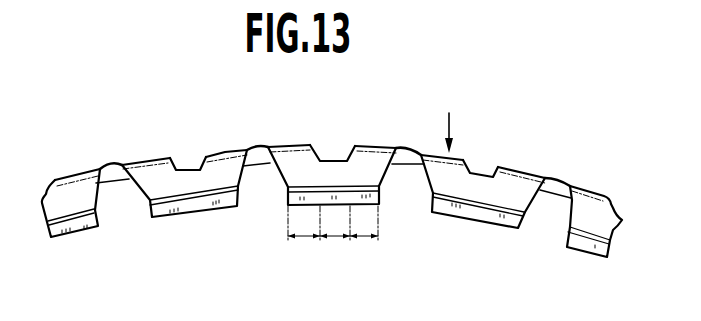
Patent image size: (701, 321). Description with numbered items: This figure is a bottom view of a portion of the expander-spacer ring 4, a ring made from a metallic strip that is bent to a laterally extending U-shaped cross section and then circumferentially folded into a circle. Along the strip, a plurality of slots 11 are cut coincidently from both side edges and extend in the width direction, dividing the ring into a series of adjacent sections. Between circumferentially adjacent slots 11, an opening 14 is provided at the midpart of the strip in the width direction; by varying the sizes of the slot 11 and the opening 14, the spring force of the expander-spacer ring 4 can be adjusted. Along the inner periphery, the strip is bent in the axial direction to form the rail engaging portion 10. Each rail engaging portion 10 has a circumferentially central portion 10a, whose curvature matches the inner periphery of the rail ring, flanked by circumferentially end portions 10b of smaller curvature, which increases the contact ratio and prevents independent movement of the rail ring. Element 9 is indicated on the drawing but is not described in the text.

The expander-spacer ring 4 is at (468, 107).
The annular band 9 is at (147, 170).
The rail engaging portion 10 is at (75, 232).
The circumferentially central portion 10a is at (335, 238).
The circumferentially end portions 10b is at (308, 238).
The slots 11 is at (118, 190).
The opening 14 is at (190, 162).